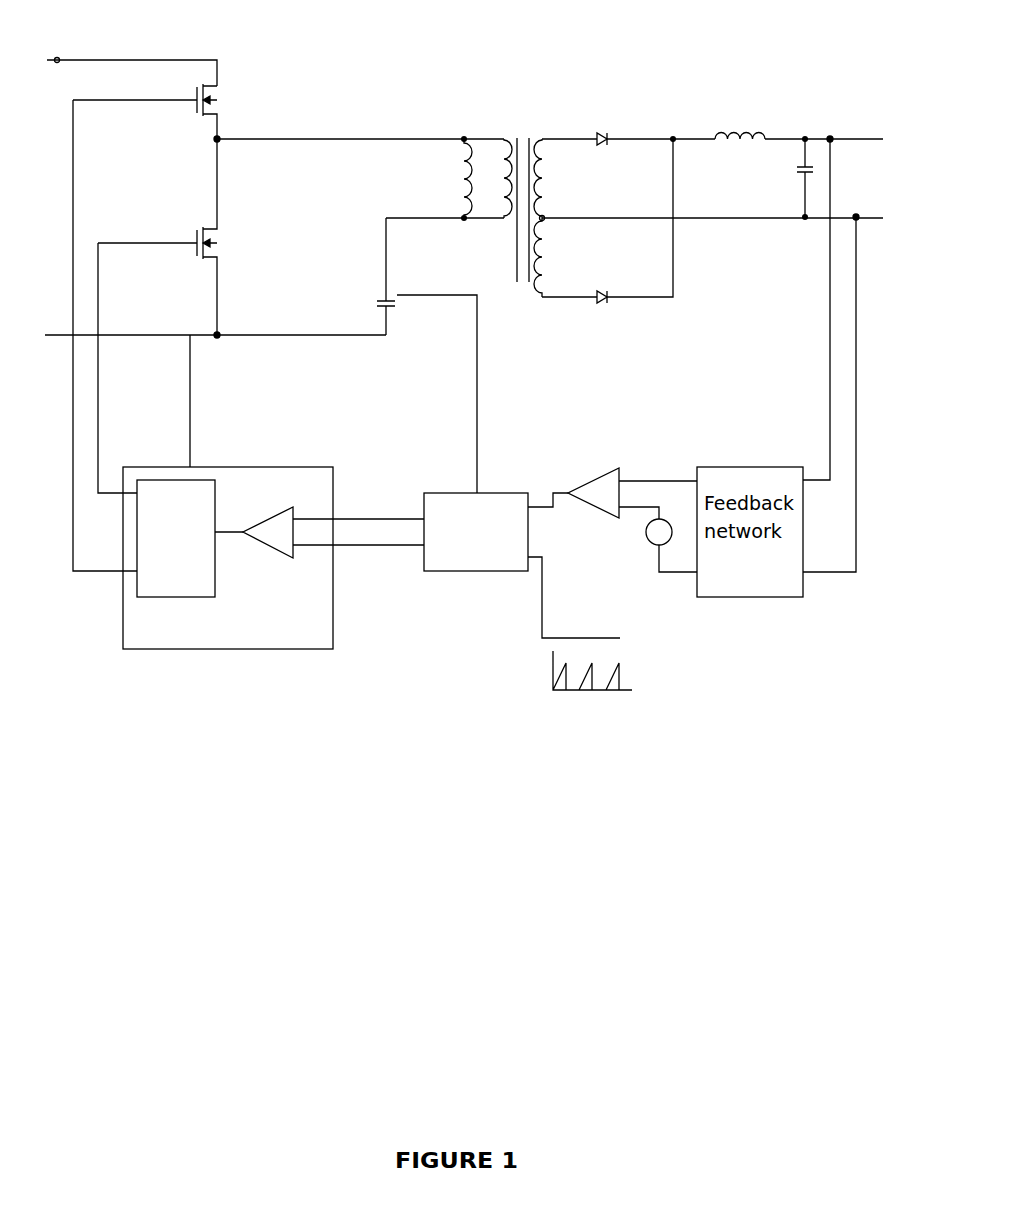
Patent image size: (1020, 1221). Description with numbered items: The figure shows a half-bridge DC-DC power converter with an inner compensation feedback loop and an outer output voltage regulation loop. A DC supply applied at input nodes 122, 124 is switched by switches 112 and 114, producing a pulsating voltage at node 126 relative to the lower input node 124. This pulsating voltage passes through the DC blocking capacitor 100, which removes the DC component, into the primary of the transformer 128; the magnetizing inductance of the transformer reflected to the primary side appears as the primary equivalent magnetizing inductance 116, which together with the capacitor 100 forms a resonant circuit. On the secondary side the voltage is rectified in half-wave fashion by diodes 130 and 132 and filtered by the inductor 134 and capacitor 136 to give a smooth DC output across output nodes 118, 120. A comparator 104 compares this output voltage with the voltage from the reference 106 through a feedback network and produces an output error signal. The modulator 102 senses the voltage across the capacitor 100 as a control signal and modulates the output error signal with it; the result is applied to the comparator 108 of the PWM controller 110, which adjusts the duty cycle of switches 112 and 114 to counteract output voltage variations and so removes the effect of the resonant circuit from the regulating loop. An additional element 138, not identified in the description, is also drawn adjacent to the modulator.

The DC blocking capacitor 100 is at (392, 307).
The modulator 102 is at (484, 544).
The comparator 104 is at (588, 500).
The reference 106 is at (642, 530).
The comparator 108 is at (293, 503).
The PWM controller 110 is at (198, 636).
The switch 112 is at (194, 106).
The switch 114 is at (194, 248).
The primary equivalent magnetizing inductance 116 is at (459, 198).
The output node 118 is at (832, 138).
The output node 120 is at (858, 215).
The input node 122 is at (57, 62).
The input node 124 is at (214, 337).
The node 126 is at (224, 133).
The transformer 128 is at (522, 130).
The diode 130 is at (607, 133).
The diode 132 is at (608, 290).
The inductor 134 is at (737, 133).
The capacitor 136 is at (802, 175).
The sawtooth oscillator waveform 138 is at (630, 664).